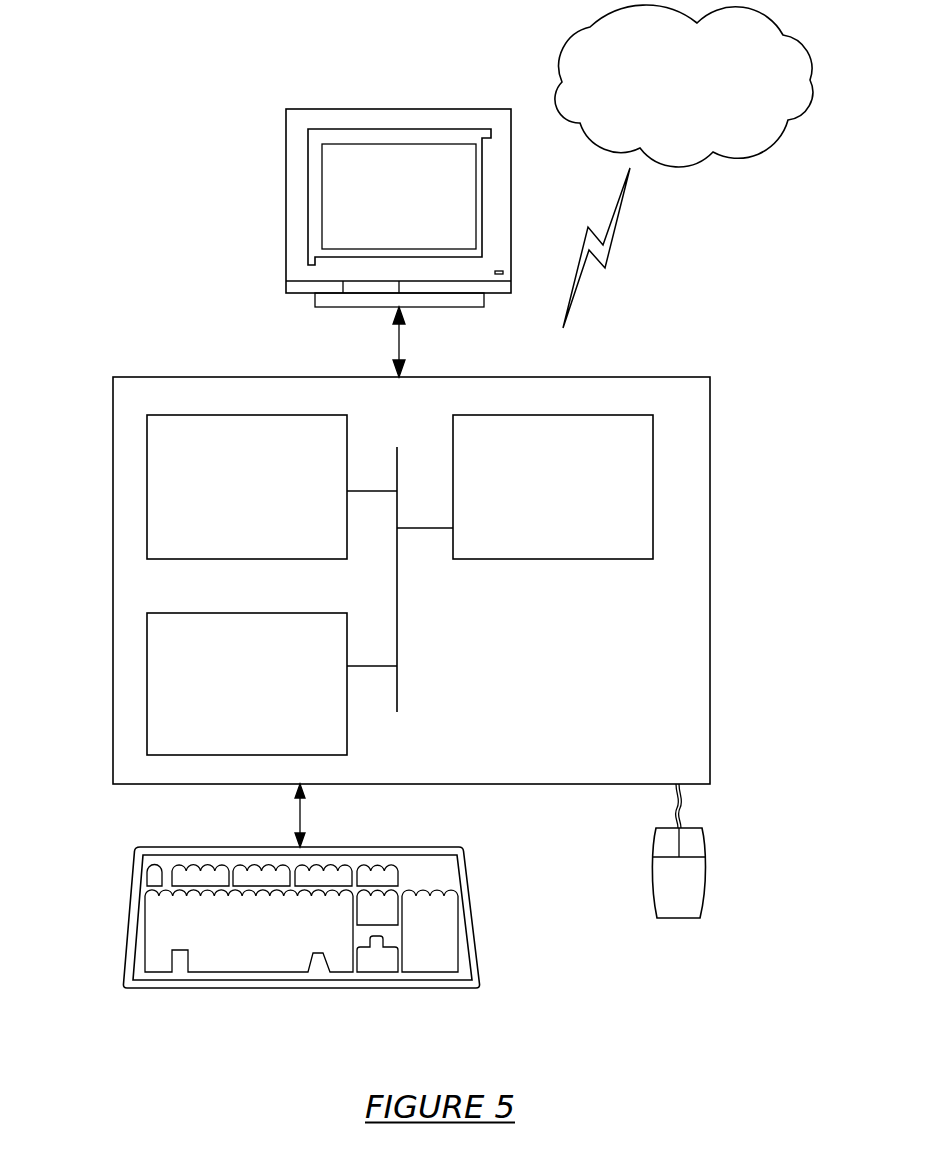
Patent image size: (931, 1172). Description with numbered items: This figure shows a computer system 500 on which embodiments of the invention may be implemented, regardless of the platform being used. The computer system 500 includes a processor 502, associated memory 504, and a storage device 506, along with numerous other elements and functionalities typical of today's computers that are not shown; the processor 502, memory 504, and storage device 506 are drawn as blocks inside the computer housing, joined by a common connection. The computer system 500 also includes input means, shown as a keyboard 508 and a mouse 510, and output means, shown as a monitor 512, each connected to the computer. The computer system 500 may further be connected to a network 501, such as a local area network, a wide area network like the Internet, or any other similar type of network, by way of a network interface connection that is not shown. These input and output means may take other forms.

The computer system 500 is at (156, 228).
The network 501 is at (704, 110).
The processor 502 is at (573, 500).
The memory 504 is at (267, 500).
The storage device 506 is at (267, 699).
The keyboard 508 is at (262, 949).
The mouse 510 is at (698, 894).
The monitor 512 is at (418, 214).